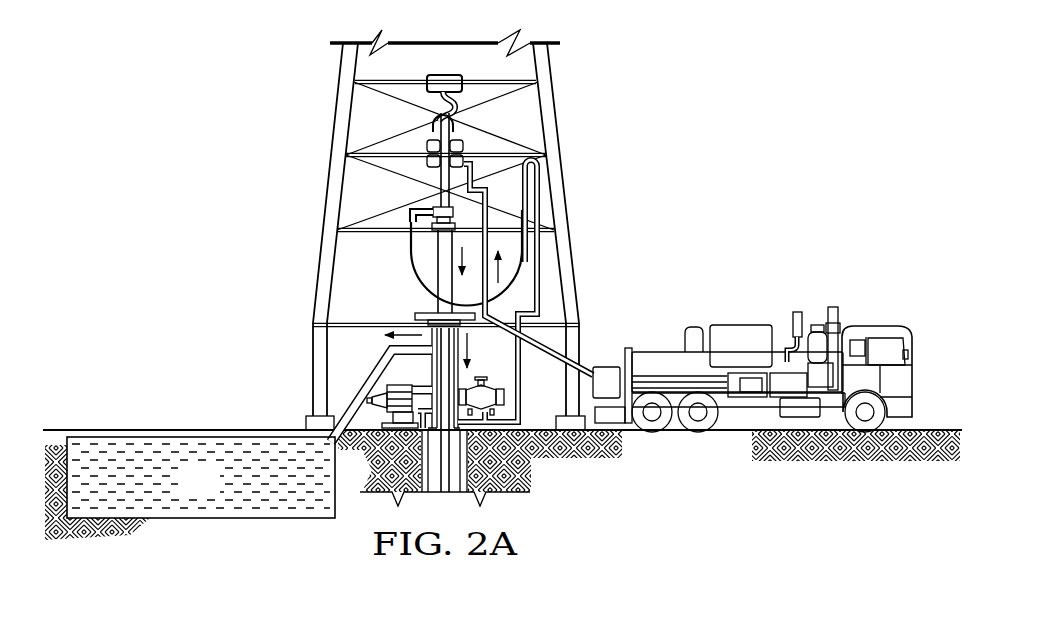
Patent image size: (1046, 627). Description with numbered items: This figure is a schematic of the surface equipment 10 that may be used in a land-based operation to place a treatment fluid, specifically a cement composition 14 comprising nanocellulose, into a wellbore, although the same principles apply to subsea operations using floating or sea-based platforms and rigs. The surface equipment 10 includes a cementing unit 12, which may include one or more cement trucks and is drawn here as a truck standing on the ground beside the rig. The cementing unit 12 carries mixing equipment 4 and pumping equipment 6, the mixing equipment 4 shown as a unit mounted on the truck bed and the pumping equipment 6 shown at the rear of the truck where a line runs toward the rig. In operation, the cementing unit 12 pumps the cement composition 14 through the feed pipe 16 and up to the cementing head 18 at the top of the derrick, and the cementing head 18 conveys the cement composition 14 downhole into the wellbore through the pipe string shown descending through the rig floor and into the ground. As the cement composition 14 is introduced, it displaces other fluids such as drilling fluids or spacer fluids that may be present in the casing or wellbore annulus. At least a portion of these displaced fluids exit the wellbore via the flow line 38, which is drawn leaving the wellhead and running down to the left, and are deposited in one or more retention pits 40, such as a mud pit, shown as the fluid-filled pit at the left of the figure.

The surface equipment 10 is at (129, 77).
The cementing head 18 is at (480, 142).
The cement composition 14 is at (458, 261).
The feed pipe 16 is at (521, 340).
The flow line 38 is at (361, 396).
The retention pit 40 is at (215, 490).
The cementing unit 12 is at (886, 313).
The pumping equipment 6 is at (607, 366).
The mixing equipment 4 is at (742, 333).